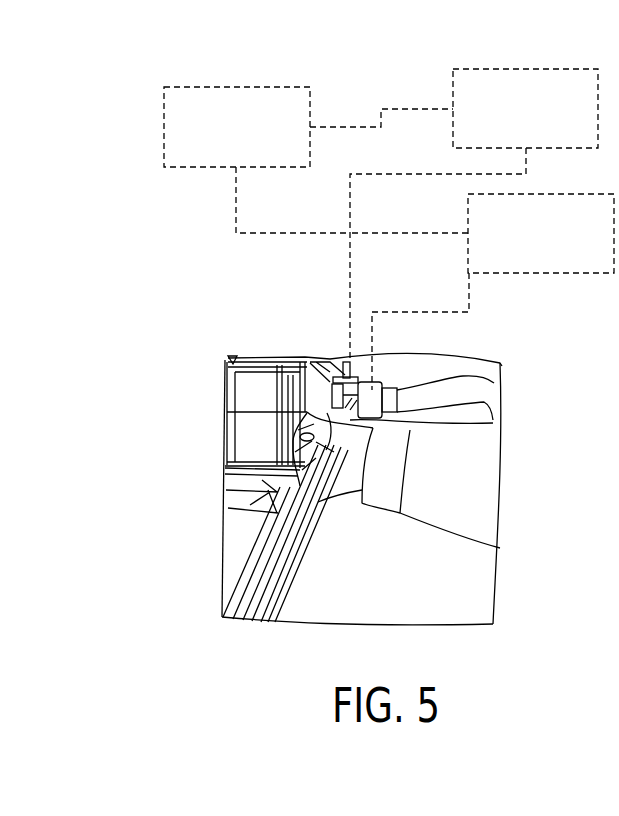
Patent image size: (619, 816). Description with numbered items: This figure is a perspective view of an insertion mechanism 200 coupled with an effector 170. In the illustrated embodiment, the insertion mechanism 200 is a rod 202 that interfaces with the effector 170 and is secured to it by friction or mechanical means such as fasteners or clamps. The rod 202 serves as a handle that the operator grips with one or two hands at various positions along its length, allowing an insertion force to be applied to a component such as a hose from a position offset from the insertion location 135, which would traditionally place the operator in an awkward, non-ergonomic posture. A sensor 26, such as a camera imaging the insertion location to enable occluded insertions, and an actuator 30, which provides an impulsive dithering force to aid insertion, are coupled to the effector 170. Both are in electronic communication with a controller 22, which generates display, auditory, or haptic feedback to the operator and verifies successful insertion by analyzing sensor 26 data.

The controller 22 is at (247, 142).
The actuator 30 is at (537, 124).
The sensor 26 is at (552, 248).
The effector 170 is at (322, 333).
The insertion location 135 is at (256, 397).
The insertion mechanism 200 is at (178, 490).
The rod 202 is at (262, 597).